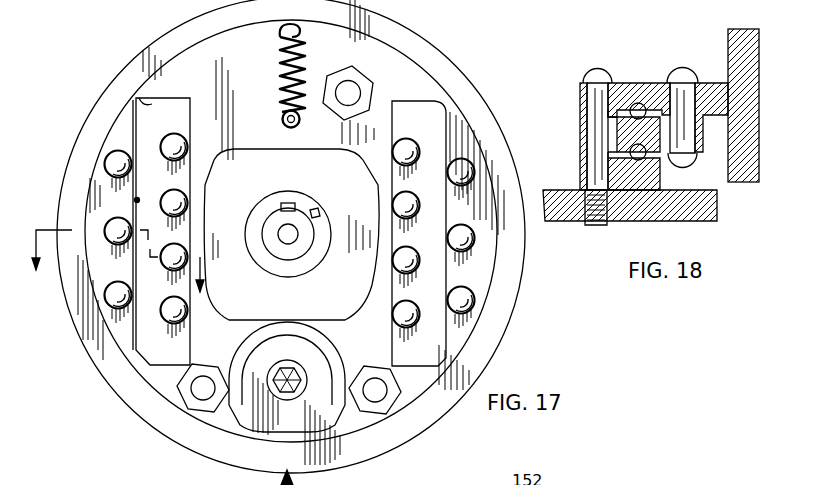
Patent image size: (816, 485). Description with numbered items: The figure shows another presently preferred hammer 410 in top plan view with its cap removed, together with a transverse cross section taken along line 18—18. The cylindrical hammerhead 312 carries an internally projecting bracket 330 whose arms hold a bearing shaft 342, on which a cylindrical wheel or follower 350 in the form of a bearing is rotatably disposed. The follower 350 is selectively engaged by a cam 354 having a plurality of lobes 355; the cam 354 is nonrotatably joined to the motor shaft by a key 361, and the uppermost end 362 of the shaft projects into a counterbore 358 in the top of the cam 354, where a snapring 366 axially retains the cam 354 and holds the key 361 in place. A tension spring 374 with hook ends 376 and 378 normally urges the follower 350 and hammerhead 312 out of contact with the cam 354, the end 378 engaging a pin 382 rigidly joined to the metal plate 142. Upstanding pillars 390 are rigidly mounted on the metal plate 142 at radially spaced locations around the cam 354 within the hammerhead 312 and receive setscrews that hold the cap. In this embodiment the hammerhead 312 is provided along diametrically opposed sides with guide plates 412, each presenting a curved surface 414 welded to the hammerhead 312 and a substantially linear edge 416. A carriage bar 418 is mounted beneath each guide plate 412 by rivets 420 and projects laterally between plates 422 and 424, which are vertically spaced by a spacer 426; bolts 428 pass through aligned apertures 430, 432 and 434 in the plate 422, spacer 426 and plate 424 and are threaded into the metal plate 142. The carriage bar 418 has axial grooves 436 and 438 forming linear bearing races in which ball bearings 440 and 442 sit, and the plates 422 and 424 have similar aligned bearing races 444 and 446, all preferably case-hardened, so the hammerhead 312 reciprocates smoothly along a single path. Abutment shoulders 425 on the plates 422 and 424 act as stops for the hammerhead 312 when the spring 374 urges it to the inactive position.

In FIG. 17, the hammer 410 is at (474, 62).
In FIG. 17, the guide plate 412 is at (120, 137).
In FIG. 18, the guide plate 412 is at (728, 88).
In FIG. 17, the curved surface 414 is at (122, 115).
In FIG. 17, the linear edge 416 is at (135, 200).
In FIG. 18, the linear edge 416 is at (668, 85).
In FIG. 18, the carriage bar 418 is at (700, 133).
In FIG. 17, the rivets 420 is at (112, 240).
In FIG. 18, the rivets 420 is at (690, 67).
In FIG. 17, the plate 422 is at (542, 245).
In FIG. 18, the plate 422 is at (612, 83).
In FIG. 18, the plate 424 is at (655, 165).
In FIG. 17, the abutment shoulders 425 is at (160, 101).
In FIG. 18, the spacer 426 is at (583, 123).
In FIG. 17, the bolts 428 is at (173, 142).
In FIG. 18, the bolts 428 is at (597, 68).
In FIG. 18, the aperture 430 is at (582, 82).
In FIG. 18, the aperture 432 is at (585, 140).
In FIG. 18, the aperture 434 is at (590, 163).
In FIG. 18, the axial groove 436 is at (592, 110).
In FIG. 18, the axial groove 438 is at (681, 166).
In FIG. 18, the ball bearings 440 is at (590, 97).
In FIG. 18, the ball bearings 442 is at (597, 172).
In FIG. 18, the bearing race 444 is at (637, 102).
In FIG. 18, the bearing race 446 is at (636, 160).
In FIG. 17, the metal plate 142 is at (247, 101).
In FIG. 18, the metal plate 142 is at (718, 208).
In FIG. 17, the hammerhead 312 is at (472, 330).
In FIG. 18, the hammerhead 312 is at (758, 154).
In FIG. 17, the bracket 330 is at (287, 368).
In FIG. 17, the bearing shaft 342 is at (285, 398).
In FIG. 17, the follower 350 is at (257, 332).
In FIG. 17, the cam 354 is at (305, 215).
In FIG. 17, the lobes 355 is at (352, 304).
In FIG. 17, the counterbore 358 is at (263, 202).
In FIG. 17, the key 361 is at (290, 203).
In FIG. 17, the uppermost end 362 is at (280, 258).
In FIG. 17, the snapring 366 is at (312, 214).
In FIG. 17, the tension spring 374 is at (307, 62).
In FIG. 17, the hook end 376 is at (278, 30).
In FIG. 17, the hook end 378 is at (301, 124).
In FIG. 17, the pin 382 is at (280, 112).
In FIG. 17, the pillars 390 is at (358, 80).
In FIG. 17, the section line 18 is at (119, 271).